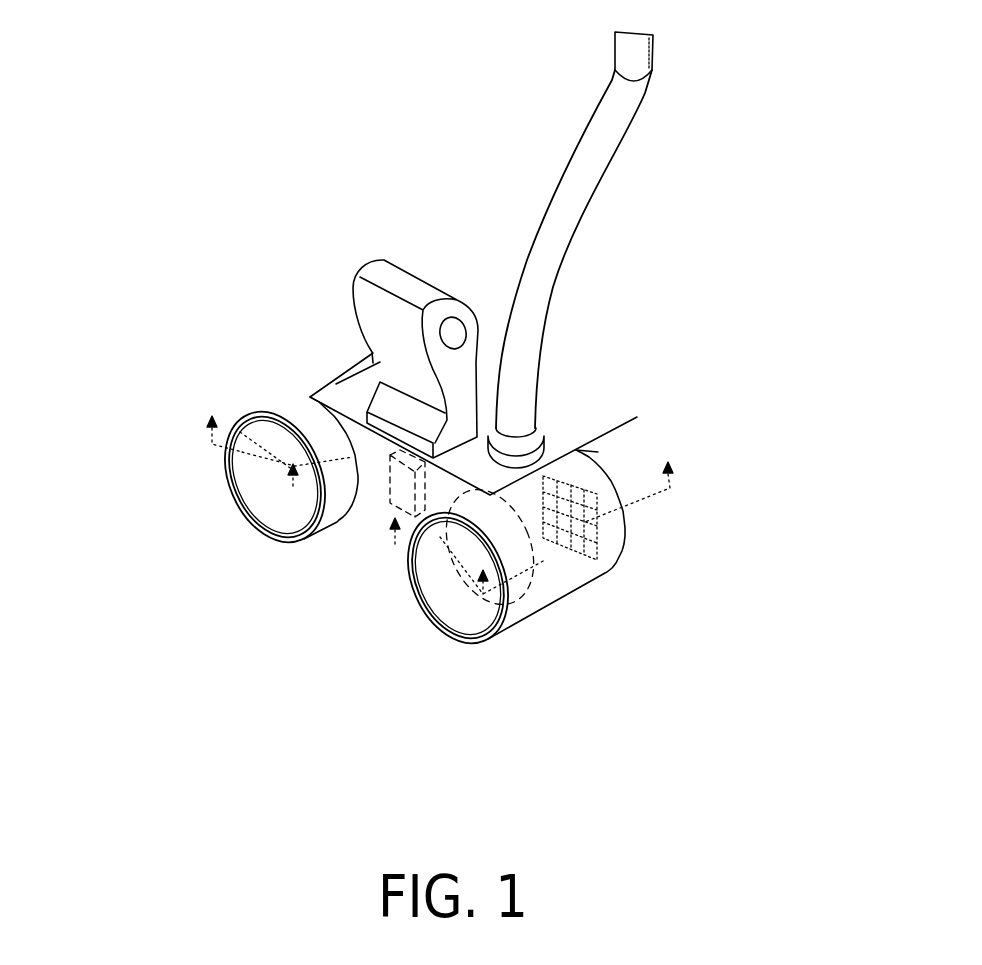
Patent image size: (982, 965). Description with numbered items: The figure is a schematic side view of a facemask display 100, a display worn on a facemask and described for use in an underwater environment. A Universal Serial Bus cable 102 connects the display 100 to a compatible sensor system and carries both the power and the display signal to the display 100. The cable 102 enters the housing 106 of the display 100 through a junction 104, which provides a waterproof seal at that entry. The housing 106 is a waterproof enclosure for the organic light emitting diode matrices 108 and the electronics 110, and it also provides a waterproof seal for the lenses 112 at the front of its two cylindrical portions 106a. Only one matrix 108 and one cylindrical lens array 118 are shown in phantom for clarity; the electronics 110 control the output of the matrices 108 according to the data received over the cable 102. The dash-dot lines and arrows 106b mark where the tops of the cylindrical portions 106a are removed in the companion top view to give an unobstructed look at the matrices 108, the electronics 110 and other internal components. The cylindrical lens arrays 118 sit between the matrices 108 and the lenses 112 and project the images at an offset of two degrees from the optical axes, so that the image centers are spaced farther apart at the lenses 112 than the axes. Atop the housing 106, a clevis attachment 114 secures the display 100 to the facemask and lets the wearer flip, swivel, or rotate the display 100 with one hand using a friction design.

The facemask display 100 is at (194, 183).
The Universal Serial Bus (USB) cable 102 is at (577, 162).
The junction 104 is at (545, 427).
The housing 106 is at (341, 346).
The cylindrical portions 106a is at (307, 388).
The arrows 106b is at (242, 452).
The organic light emitting diode (OLED) matrices 108 is at (594, 548).
The electronics 110 is at (380, 510).
The lenses 112 is at (255, 513).
The clevis attachment 114 is at (407, 272).
The cylindrical lens arrays 118 is at (548, 598).